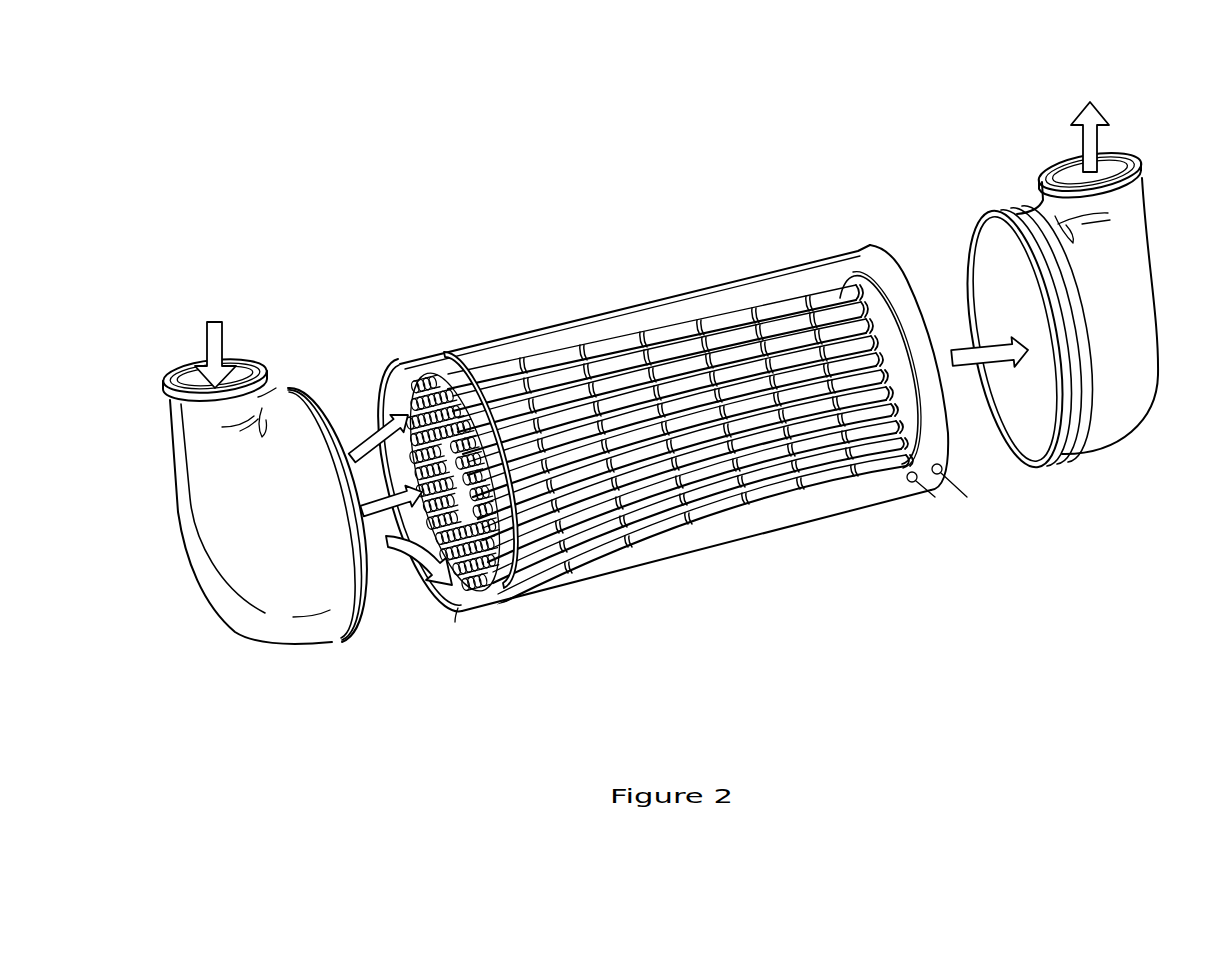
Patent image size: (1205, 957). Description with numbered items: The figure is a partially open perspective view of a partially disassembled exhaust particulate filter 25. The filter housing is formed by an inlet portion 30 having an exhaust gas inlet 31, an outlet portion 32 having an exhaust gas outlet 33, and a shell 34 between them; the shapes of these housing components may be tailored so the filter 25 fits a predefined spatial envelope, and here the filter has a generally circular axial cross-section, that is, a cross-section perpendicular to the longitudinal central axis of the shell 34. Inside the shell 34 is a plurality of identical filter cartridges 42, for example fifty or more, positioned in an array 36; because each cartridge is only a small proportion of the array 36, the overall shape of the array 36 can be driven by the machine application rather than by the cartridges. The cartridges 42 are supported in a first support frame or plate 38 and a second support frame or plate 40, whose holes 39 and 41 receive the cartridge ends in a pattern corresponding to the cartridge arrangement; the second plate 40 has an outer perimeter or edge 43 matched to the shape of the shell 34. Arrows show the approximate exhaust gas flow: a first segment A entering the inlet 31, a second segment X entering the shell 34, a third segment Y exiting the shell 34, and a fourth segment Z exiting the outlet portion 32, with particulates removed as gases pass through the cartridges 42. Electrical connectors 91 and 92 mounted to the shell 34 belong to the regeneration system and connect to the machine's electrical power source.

The exhaust particulate filter 25 is at (438, 309).
The inlet portion 30 is at (233, 614).
The exhaust gas inlet 31 is at (165, 386).
The outlet portion 32 is at (1123, 419).
The exhaust gas outlet 33 is at (1141, 165).
The shell 34 is at (609, 558).
The array 36 is at (433, 607).
The first support frame or plate 38 is at (480, 368).
The holes 39 is at (452, 362).
The second support frame or plate 40 is at (887, 313).
The holes 41 is at (868, 284).
The filter cartridges 42 is at (458, 612).
The outer perimeter or edge 43 is at (918, 415).
The electrical connector 91 is at (915, 492).
The electrical connector 92 is at (953, 492).
The first segment A is at (208, 360).
The second segment X is at (360, 452).
The third segment Y is at (952, 356).
The fourth segment Z is at (1100, 133).